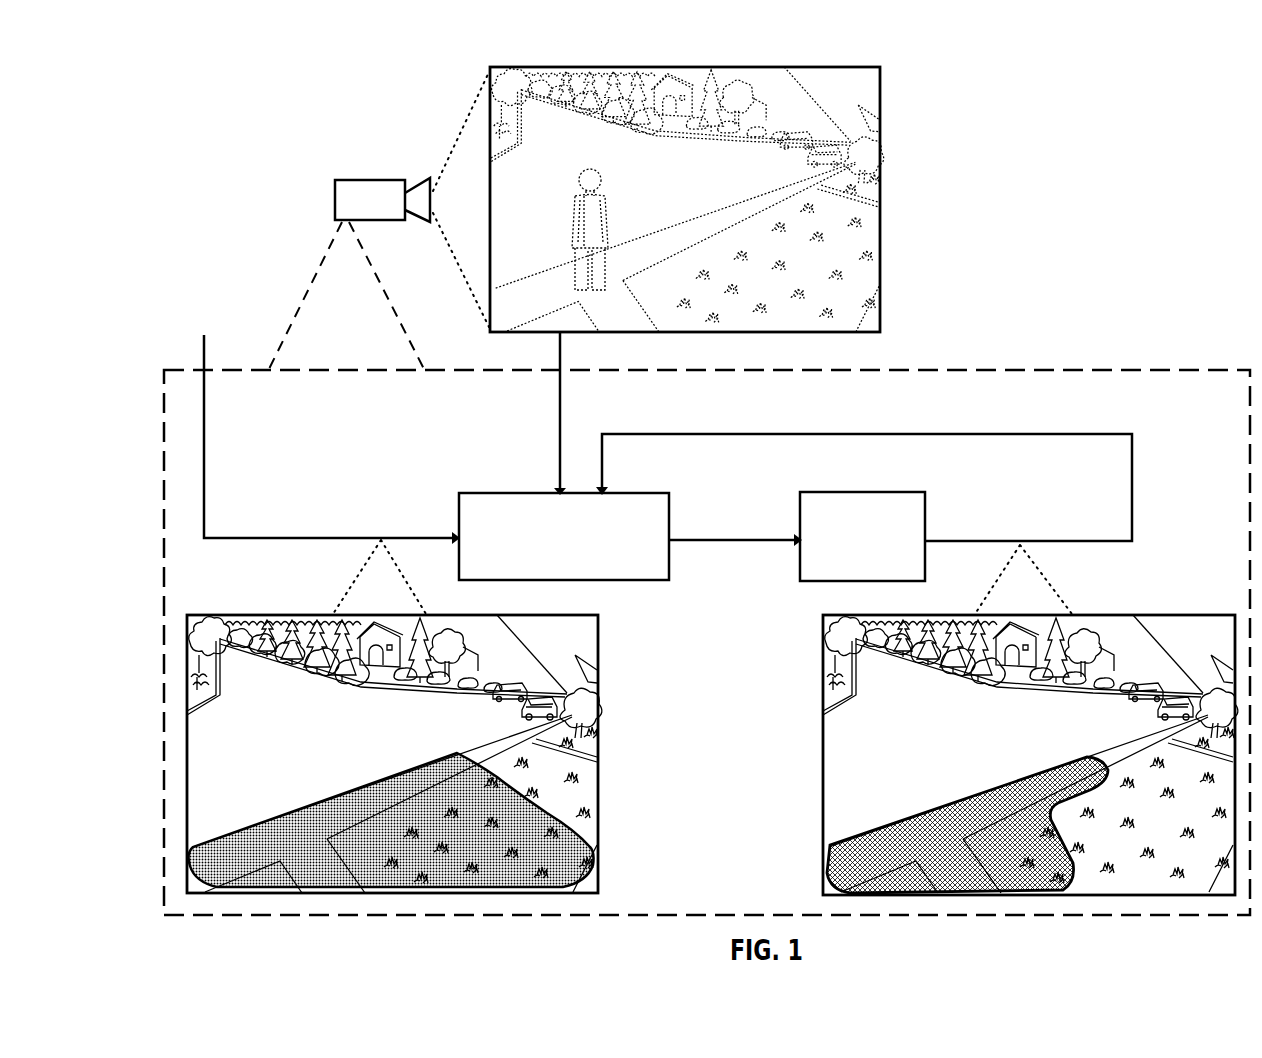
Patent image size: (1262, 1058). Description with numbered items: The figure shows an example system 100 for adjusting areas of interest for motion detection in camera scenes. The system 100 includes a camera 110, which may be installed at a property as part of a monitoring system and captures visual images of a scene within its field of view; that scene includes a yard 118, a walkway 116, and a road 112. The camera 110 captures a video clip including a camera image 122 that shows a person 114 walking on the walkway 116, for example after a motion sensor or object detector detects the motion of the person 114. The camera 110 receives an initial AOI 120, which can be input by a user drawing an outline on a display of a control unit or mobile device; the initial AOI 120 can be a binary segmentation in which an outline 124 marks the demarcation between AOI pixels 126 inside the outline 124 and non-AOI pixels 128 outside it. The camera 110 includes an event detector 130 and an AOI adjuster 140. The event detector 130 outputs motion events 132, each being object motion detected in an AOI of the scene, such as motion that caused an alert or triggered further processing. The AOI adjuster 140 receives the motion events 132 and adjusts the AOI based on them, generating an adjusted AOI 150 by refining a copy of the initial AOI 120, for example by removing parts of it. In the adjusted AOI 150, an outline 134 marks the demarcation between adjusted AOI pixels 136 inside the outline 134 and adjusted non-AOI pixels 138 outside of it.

The system 100 is at (281, 77).
The camera 110 is at (368, 180).
The road 112 is at (700, 185).
The person 114 is at (608, 197).
The walkway 116 is at (669, 258).
The yard 118 is at (767, 300).
The initial AOI 120 is at (191, 286).
The camera image 122 is at (486, 422).
The outline 124 is at (333, 793).
The AOI pixels 126 is at (390, 810).
The non-AOI pixels 128 is at (394, 741).
The event detector 130 is at (577, 571).
The motion events 132 is at (692, 491).
The outline 134 is at (940, 801).
The adjusted AOI pixels 136 is at (1007, 813).
The adjusted non-AOI pixels 138 is at (1010, 743).
The AOI adjuster 140 is at (877, 571).
The adjusted AOI 150 is at (960, 499).